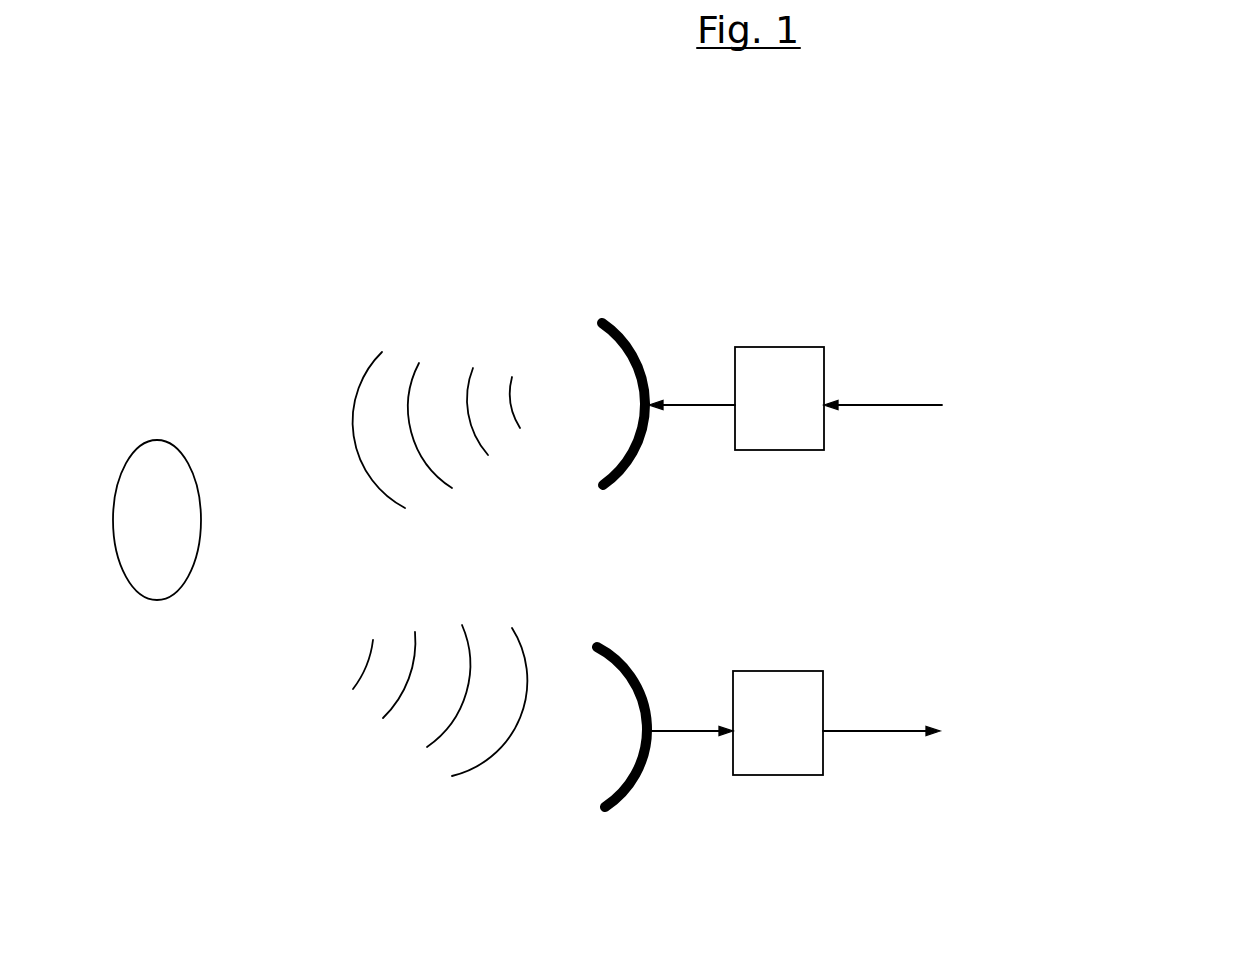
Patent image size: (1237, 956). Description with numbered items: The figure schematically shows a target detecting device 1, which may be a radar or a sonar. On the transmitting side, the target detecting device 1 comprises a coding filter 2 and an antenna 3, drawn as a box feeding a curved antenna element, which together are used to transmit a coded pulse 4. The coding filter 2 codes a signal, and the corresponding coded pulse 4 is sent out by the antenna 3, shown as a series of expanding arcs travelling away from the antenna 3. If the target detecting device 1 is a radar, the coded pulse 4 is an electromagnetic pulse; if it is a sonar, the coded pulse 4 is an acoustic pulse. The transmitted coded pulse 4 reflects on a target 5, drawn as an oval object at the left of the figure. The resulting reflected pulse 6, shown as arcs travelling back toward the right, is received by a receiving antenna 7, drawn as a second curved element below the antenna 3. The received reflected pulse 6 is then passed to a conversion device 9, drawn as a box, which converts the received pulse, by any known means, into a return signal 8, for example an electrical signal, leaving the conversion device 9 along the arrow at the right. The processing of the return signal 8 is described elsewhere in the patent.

The target detecting device 1 is at (1026, 327).
The coding filter 2 is at (770, 417).
The antenna 3 is at (624, 331).
The coded pulse 4 is at (345, 314).
The target 5 is at (122, 473).
The reflected pulse 6 is at (362, 758).
The receiving antenna 7 is at (622, 803).
The return signal 8 is at (873, 737).
The conversion device 9 is at (768, 737).